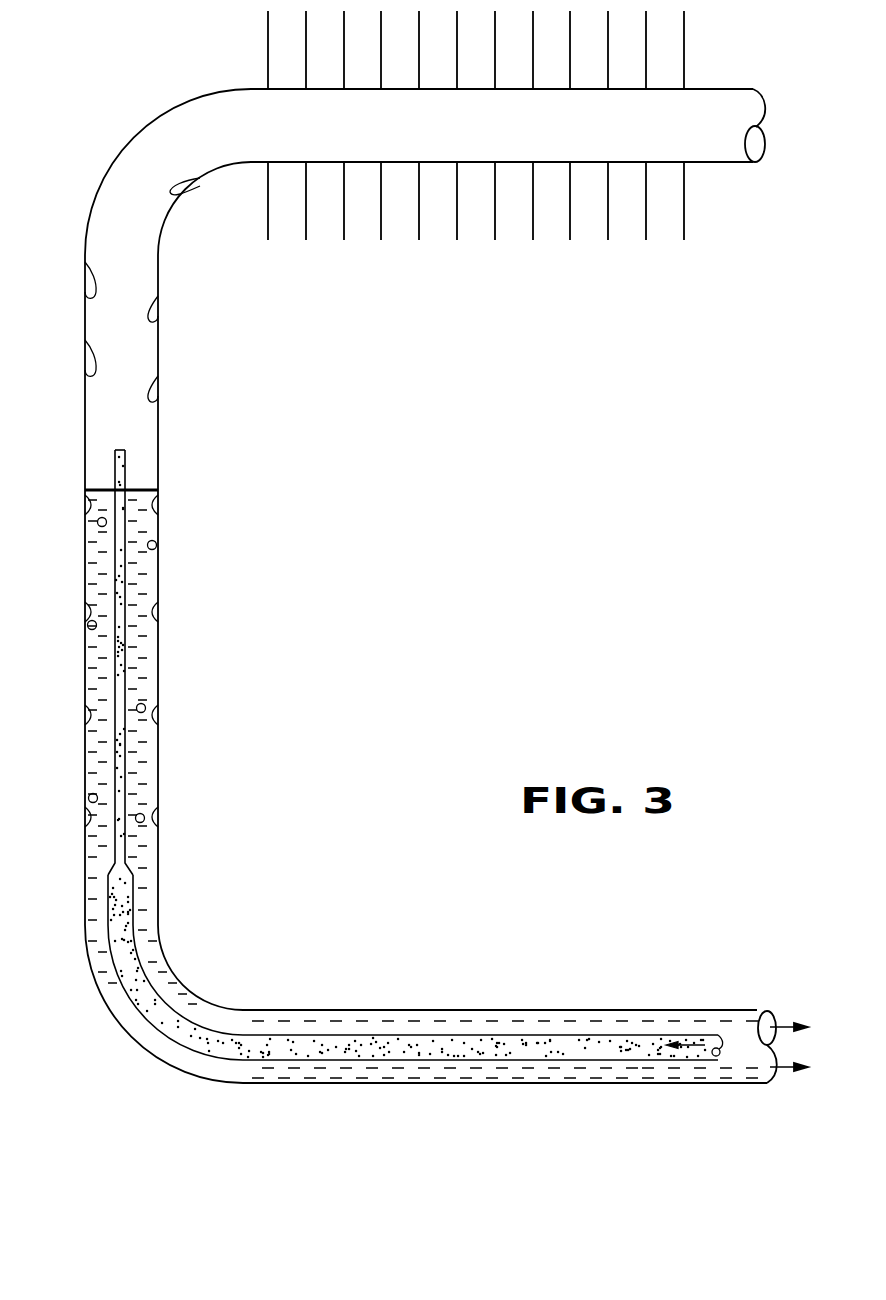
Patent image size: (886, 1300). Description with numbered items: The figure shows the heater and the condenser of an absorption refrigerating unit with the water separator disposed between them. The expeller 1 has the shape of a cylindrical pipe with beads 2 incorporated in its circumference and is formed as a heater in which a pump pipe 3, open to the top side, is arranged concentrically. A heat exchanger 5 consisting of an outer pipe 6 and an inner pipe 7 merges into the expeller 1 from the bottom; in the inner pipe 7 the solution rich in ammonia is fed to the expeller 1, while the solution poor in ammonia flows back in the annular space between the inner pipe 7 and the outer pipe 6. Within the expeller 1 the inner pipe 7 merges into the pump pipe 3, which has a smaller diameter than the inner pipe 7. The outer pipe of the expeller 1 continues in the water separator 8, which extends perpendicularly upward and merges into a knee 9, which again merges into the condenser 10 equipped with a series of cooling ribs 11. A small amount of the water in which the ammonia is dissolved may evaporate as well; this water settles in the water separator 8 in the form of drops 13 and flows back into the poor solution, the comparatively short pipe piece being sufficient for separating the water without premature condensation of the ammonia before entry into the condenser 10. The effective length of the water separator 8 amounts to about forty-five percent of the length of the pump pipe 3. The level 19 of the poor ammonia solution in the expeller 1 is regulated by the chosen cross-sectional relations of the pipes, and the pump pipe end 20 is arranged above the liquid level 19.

The expeller 1 is at (180, 668).
The beads 2 is at (155, 720).
The pump pipe 3 is at (125, 583).
The heat exchanger 5 is at (533, 1090).
The outer pipe 6 is at (430, 1018).
The inner pipe 7 is at (545, 1045).
The water separator 8 is at (160, 342).
The knee 9 is at (140, 135).
The condenser 10 is at (440, 258).
The cooling ribs 11 is at (495, 240).
The drops 13 is at (157, 312).
The liquid level 19 is at (157, 492).
The pump pipe end 20 is at (125, 450).